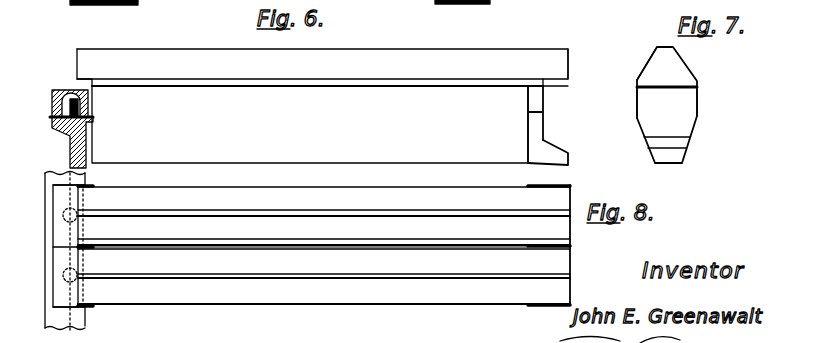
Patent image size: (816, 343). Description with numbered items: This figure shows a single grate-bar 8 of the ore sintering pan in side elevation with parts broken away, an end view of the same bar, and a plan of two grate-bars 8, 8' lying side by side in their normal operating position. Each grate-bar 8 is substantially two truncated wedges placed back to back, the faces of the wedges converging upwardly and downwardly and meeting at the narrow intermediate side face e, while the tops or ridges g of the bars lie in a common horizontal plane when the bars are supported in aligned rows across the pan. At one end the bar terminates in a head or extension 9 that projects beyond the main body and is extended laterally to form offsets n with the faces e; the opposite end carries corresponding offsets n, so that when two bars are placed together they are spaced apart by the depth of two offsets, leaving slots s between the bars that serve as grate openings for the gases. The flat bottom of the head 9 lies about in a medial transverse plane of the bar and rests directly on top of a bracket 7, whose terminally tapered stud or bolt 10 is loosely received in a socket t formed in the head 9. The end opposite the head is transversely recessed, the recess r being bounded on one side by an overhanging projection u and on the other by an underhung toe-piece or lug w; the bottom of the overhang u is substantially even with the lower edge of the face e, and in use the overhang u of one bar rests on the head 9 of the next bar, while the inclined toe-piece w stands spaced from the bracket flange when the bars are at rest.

In FIG. 6, the bracket 7 is at (72, 155).
In FIG. 6, the grate-bar 8 is at (310, 124).
In FIG. 7, the grate-bar 8 is at (682, 105).
In FIG. 8, the pipe section 8' is at (324, 257).
In FIG. 6, the head or extension 9 is at (56, 90).
In FIG. 8, the head or extension 9 is at (58, 231).
In FIG. 6, the stud or bolt 10 is at (50, 128).
In FIG. 6, the socket t is at (63, 106).
In FIG. 8, the socket t is at (70, 214).
In FIG. 6, the offsets n is at (83, 78).
In FIG. 7, the offsets n is at (638, 78).
In FIG. 8, the offsets n is at (87, 189).
In FIG. 6, the tops or ridges g is at (380, 50).
In FIG. 8, the tops or ridges g is at (178, 216).
In FIG. 6, the narrow intermediate face e is at (262, 88).
In FIG. 7, the narrow intermediate face e is at (637, 81).
In FIG. 6, the overhanging projection u is at (568, 82).
In FIG. 6, the recess r is at (553, 130).
In FIG. 7, the recess r is at (683, 112).
In FIG. 6, the toe-piece or lug w is at (570, 157).
In FIG. 7, the toe-piece or lug w is at (685, 158).
In FIG. 8, the slots s is at (404, 247).